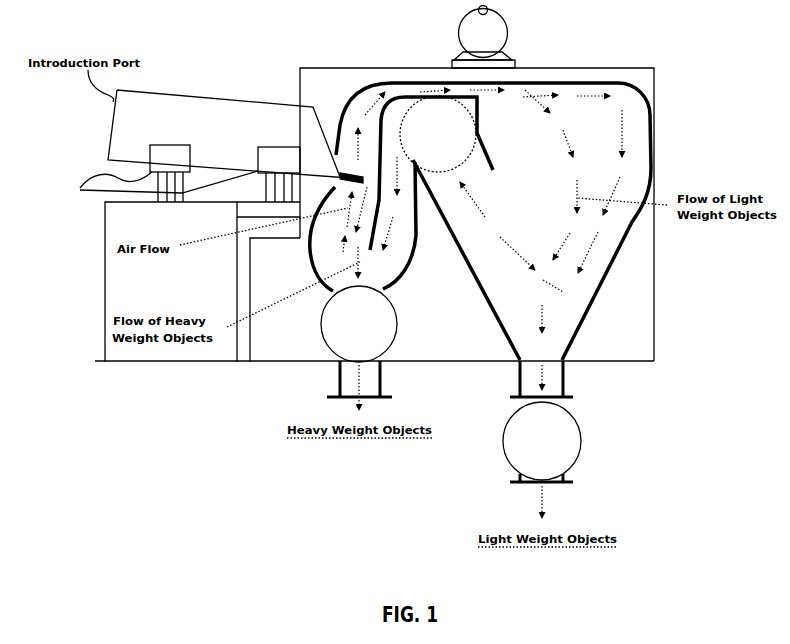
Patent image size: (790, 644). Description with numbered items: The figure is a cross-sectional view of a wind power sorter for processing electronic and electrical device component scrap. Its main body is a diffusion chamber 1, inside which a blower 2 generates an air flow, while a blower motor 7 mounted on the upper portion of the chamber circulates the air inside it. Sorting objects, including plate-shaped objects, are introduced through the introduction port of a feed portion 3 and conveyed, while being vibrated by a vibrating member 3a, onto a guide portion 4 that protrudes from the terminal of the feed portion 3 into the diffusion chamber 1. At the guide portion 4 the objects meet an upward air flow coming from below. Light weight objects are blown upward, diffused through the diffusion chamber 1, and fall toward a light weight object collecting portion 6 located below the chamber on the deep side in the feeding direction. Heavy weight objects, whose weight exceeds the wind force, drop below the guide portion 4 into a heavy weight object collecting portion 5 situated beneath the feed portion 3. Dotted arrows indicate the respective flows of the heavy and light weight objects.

The diffusion chamber 1 is at (632, 88).
The blower 2 is at (413, 125).
The feed portion 3 is at (212, 110).
The vibrating member 3a is at (82, 189).
The guide portion 4 is at (345, 176).
The heavy weight object collecting portion 5 is at (337, 323).
The light weight object collecting portion 6 is at (543, 437).
The blower motor 7 is at (493, 30).